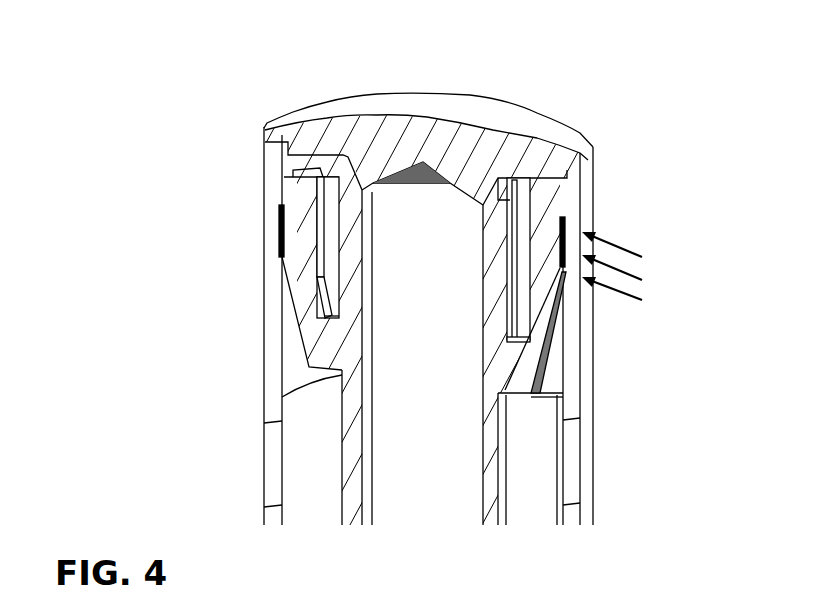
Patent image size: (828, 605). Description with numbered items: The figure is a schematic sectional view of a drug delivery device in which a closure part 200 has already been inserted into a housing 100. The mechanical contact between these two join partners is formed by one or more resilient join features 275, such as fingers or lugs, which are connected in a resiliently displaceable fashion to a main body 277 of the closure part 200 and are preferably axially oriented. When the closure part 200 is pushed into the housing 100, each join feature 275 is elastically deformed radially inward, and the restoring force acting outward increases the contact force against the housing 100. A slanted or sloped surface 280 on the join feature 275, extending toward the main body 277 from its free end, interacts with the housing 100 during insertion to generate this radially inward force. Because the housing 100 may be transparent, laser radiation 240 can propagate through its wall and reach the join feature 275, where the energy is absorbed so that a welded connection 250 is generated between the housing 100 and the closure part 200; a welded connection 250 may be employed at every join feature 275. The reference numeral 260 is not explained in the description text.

The housing 100 is at (574, 468).
The closure part 200 is at (498, 152).
The laser radiation 240 is at (655, 270).
The welded connection 250 is at (281, 243).
The left latch tab 260 is at (292, 198).
The join feature 275 is at (548, 228).
The main body 277 is at (357, 172).
The slanted or sloped surface 280 is at (297, 317).